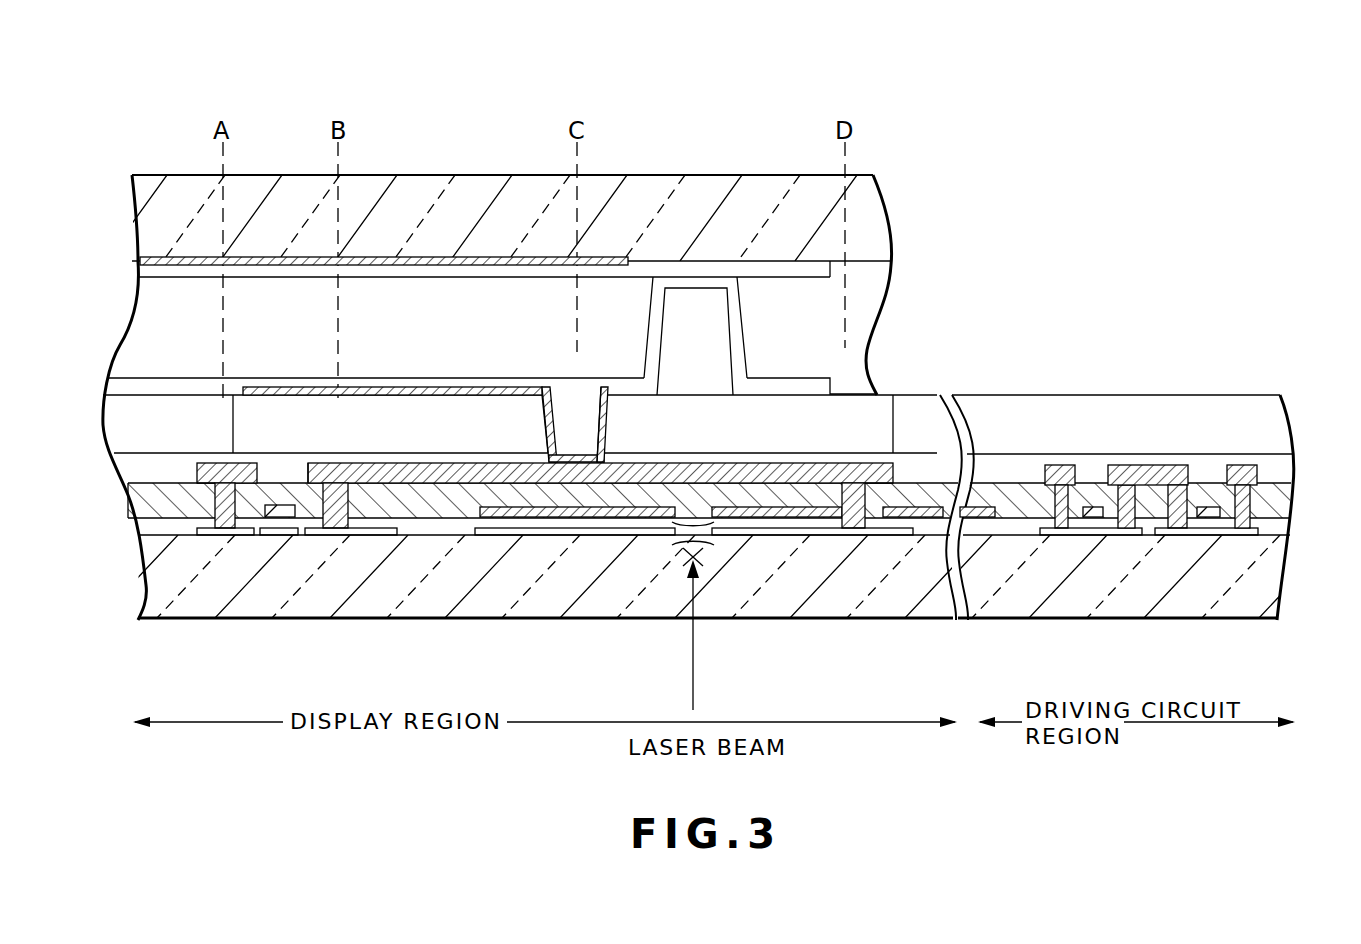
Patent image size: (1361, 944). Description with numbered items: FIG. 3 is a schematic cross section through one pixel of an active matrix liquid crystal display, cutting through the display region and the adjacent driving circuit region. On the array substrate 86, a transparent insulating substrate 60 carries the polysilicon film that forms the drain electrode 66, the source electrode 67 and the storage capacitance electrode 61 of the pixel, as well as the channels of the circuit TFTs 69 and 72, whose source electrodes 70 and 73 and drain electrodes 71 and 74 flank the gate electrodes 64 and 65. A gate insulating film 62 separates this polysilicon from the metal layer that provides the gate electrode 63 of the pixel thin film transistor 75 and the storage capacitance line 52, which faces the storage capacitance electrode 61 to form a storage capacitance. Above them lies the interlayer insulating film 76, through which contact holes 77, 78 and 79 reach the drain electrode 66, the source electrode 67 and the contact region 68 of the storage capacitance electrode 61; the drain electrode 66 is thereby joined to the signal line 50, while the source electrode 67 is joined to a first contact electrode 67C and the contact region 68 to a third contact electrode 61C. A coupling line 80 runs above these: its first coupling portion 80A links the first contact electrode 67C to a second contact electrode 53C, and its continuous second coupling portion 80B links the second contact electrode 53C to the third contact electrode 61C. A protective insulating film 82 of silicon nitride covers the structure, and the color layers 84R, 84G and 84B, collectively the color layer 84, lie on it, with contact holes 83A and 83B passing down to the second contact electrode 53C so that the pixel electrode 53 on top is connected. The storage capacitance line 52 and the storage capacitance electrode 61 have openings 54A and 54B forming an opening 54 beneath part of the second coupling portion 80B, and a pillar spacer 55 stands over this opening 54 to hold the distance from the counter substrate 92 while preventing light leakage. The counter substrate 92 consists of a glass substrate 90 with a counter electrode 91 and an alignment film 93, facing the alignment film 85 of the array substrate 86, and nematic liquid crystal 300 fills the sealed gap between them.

The signal line 50 is at (210, 466).
The storage capacitance line 52 is at (494, 518).
The pixel electrode 53 is at (397, 388).
The second contact electrode 53C is at (588, 462).
The opening 54 is at (695, 591).
The opening in storage capacitance line 54A is at (690, 550).
The opening in storage capacitance electrode 54B is at (700, 550).
The pillar spacer 55 is at (724, 352).
The transparent insulating substrate 60 is at (1272, 600).
The storage capacitance electrode 61 is at (545, 536).
The third contact electrode 61C is at (848, 464).
The gate insulating film 62 is at (140, 527).
The gate electrode 63 is at (278, 505).
The gate electrode of circuit TFT 64 is at (1094, 506).
The gate electrode of circuit TFT 65 is at (1207, 506).
The drain electrode 66 is at (224, 530).
The source electrode 67 is at (338, 530).
The first contact electrode 67C is at (338, 486).
The contact region 68 is at (855, 530).
The N-channel circuit TFT 69 is at (1092, 535).
The source electrode of circuit TFT 70 is at (1060, 535).
The drain electrode of circuit TFT 71 is at (1127, 530).
The circuit TFT 72 is at (1213, 533).
The source electrode of circuit TFT 73 is at (1176, 530).
The drain electrode of circuit TFT 74 is at (1244, 530).
The thin film transistor 75 is at (278, 550).
The interlayer insulating film 76 is at (135, 497).
The contact hole 77 is at (205, 497).
The contact hole 78 is at (353, 480).
The contact hole 79 is at (870, 532).
The coupling line 80 is at (464, 458).
The first coupling portion 80A is at (428, 490).
The second coupling portion 80B is at (628, 490).
The protective insulating film 82 is at (1277, 496).
The contact hole 83A is at (534, 460).
The contact hole 83B is at (600, 416).
The color layer 84 is at (1236, 410).
The green color layer 84G is at (173, 412).
The red color layer 84R is at (242, 408).
The blue color layer 84B is at (915, 397).
The alignment film 85 is at (120, 382).
The array substrate 86 is at (132, 574).
The glass substrate 90 is at (880, 232).
The counter electrode 91 is at (608, 257).
The counter substrate 92 is at (112, 236).
The alignment film 93 is at (142, 270).
The nematic liquid crystal 300 is at (120, 340).